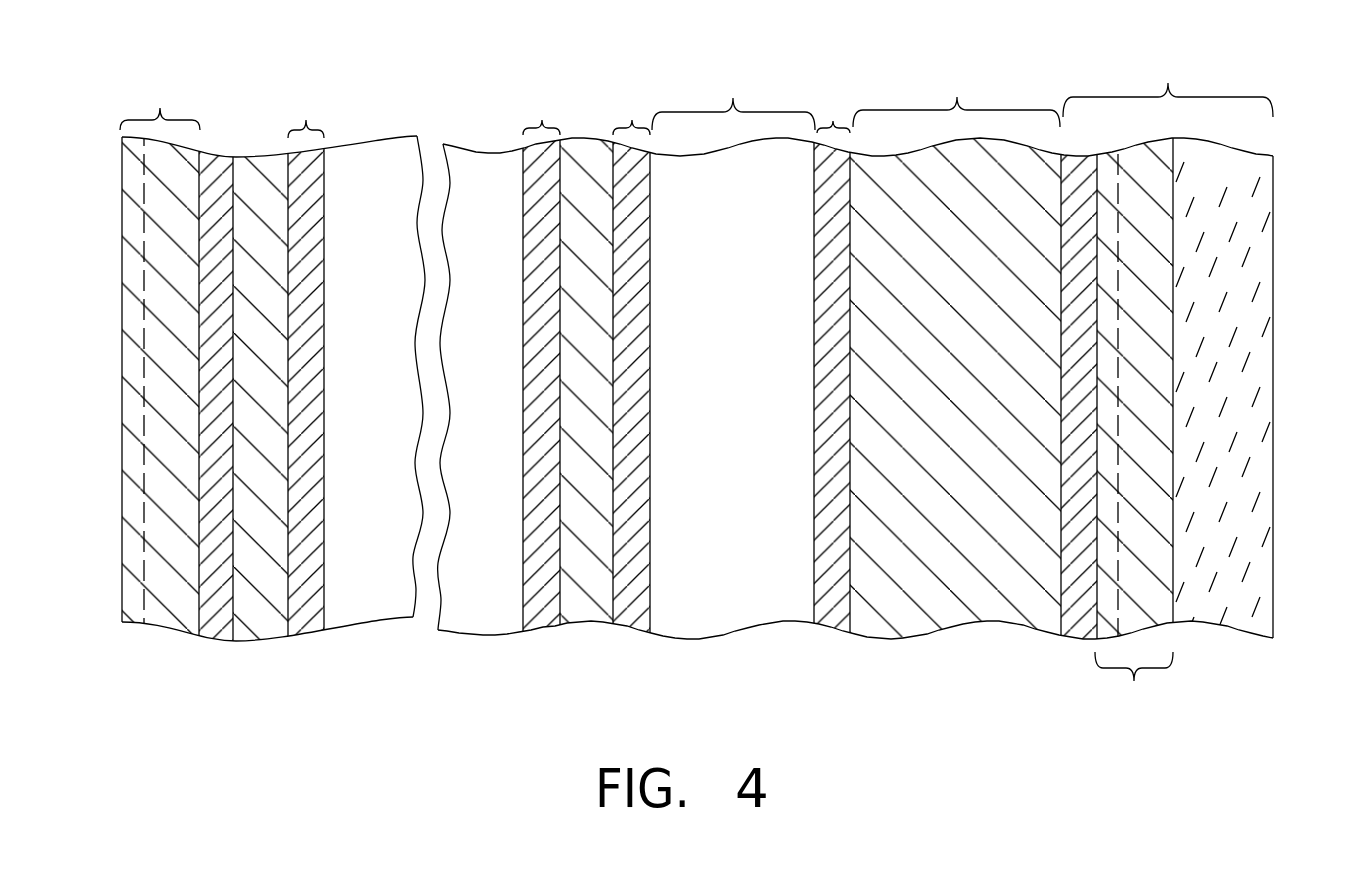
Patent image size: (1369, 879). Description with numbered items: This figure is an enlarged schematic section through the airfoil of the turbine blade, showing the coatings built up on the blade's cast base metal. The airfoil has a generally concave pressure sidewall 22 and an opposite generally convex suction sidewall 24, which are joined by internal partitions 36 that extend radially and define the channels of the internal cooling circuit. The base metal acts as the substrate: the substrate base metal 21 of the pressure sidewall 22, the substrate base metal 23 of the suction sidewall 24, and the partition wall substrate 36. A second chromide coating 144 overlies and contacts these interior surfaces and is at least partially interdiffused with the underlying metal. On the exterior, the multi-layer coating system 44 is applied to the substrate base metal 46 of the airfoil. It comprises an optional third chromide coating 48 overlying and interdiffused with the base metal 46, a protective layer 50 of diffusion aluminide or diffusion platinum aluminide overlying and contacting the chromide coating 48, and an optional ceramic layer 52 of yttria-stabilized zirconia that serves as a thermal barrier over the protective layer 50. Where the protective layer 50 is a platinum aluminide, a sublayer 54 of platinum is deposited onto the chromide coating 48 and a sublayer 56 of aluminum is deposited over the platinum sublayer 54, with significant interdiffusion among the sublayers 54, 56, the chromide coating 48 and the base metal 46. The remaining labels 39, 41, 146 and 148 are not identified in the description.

The substrate base metal of the pressure side wall 21 is at (888, 472).
The pressure sidewall 22 is at (888, 278).
The substrate base metal of the suction side wall 23 is at (280, 497).
The suction sidewall 24 is at (283, 268).
The internal partitions 36 is at (583, 610).
The substrate 39 is at (1273, 297).
The outer surface 41 is at (122, 305).
The multi-layer coating system 44 is at (1168, 83).
The substrate base metal of the airfoil 46 is at (958, 97).
The third chromide coating 48 is at (222, 618).
The protective layer 50 is at (160, 107).
The ceramic layer 52 is at (1248, 625).
The sublayer of platinum 54 is at (178, 605).
The sublayer of aluminum 56 is at (135, 551).
The second chromide coating 144 is at (307, 120).
The gap region 146 is at (733, 98).
The interface layer 148 is at (814, 430).